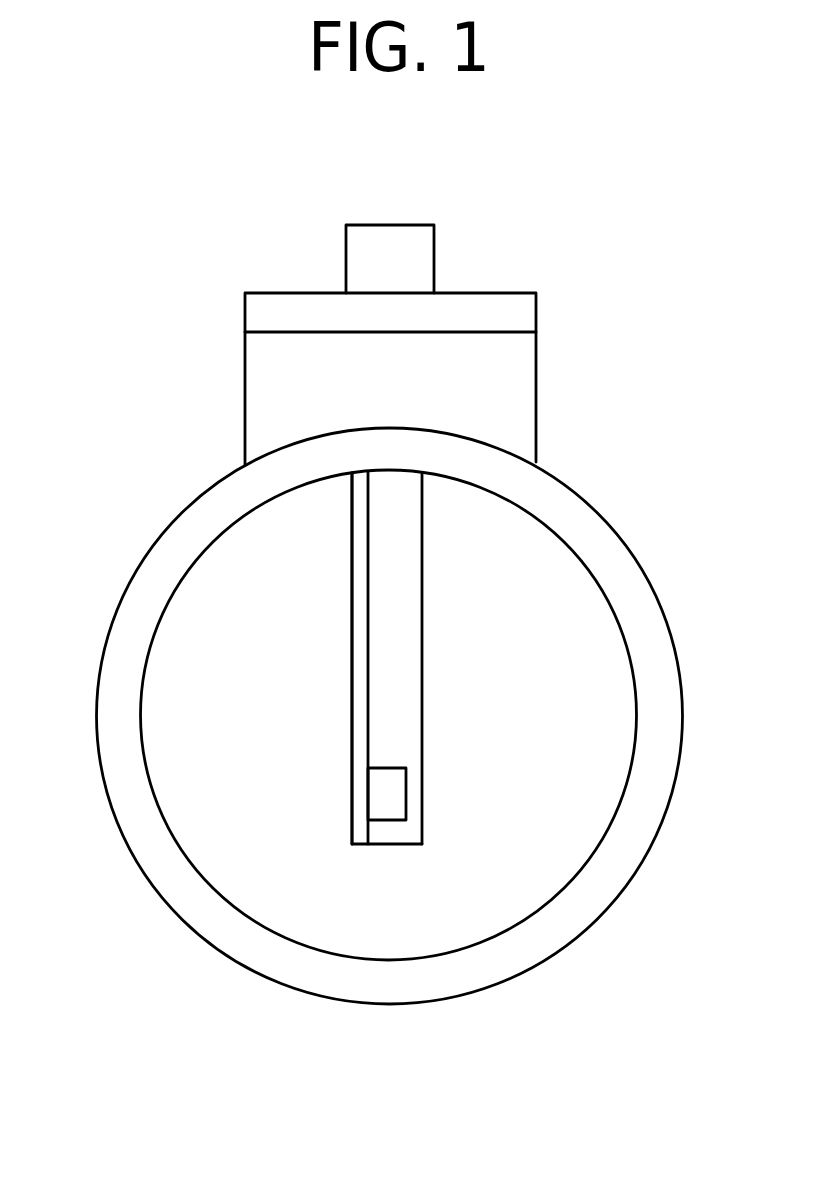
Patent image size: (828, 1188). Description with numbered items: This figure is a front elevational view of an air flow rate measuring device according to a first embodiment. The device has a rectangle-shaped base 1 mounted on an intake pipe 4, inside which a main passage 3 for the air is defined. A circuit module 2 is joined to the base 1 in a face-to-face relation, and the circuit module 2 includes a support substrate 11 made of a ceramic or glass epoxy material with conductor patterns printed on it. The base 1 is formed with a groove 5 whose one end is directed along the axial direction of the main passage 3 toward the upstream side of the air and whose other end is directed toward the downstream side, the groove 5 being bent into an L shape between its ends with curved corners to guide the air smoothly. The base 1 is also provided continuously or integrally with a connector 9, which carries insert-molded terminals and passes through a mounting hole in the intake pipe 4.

The base 1 is at (407, 580).
The circuit module 2 is at (350, 556).
The main passage 3 is at (633, 757).
The intake pipe 4 is at (547, 470).
The groove 5 is at (388, 820).
The connector 9 is at (365, 255).
The support substrate 11 is at (350, 705).